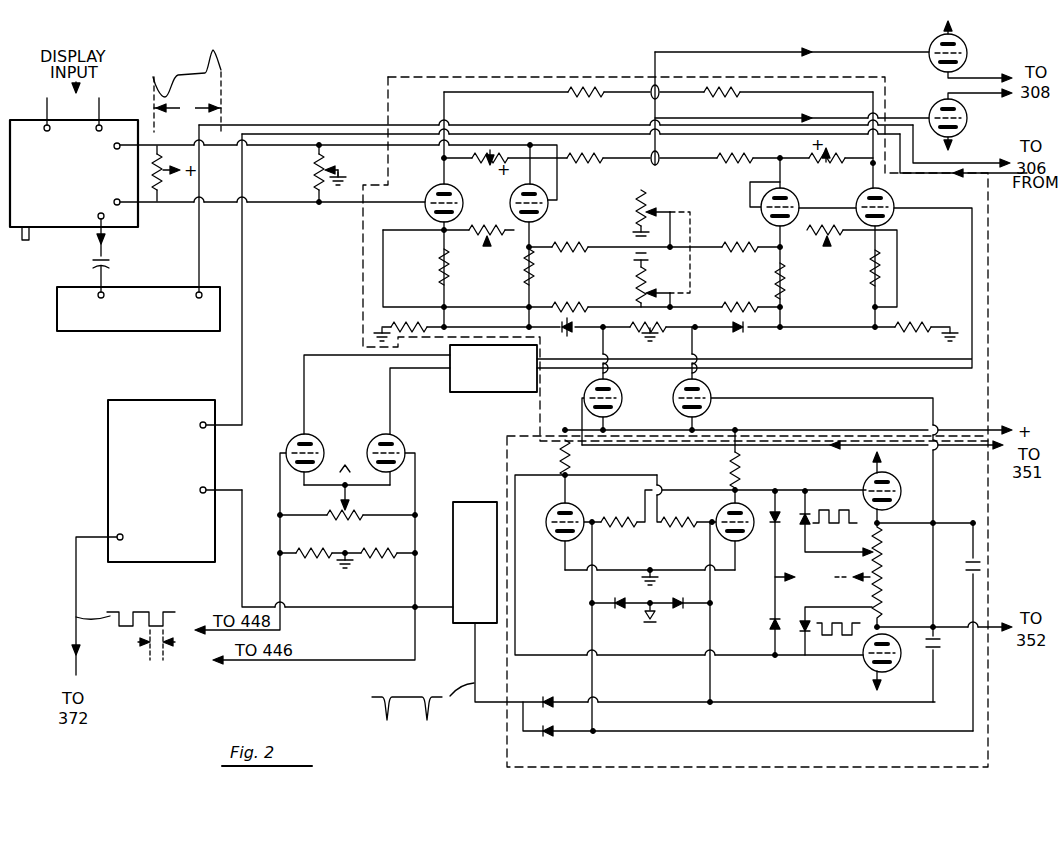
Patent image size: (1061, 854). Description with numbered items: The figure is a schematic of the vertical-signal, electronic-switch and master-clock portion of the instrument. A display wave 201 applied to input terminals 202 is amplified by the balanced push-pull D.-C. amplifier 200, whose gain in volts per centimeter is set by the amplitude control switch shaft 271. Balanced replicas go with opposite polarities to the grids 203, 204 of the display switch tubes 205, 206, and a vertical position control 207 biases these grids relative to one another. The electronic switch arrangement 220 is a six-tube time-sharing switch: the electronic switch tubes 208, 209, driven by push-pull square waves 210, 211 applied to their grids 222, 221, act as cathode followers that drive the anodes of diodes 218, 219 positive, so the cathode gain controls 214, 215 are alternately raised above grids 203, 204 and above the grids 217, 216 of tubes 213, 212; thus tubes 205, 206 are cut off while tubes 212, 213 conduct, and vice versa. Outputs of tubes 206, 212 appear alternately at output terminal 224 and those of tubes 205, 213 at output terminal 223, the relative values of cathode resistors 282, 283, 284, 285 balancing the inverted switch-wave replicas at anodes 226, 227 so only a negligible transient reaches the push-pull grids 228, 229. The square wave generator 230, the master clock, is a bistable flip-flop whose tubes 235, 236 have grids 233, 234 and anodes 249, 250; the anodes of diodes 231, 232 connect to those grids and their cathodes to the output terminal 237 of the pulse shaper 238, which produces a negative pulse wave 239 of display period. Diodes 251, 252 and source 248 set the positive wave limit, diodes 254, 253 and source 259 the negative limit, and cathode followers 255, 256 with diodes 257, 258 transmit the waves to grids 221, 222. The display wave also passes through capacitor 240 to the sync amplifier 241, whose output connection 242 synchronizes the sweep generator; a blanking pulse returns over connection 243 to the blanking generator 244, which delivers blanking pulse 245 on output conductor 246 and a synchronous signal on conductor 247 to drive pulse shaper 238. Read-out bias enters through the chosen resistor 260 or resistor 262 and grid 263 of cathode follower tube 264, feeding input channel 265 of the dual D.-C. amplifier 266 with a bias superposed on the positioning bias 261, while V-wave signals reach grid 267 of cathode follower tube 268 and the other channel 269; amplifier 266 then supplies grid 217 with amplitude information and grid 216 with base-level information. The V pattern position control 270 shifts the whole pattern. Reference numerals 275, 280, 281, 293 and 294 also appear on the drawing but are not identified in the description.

The amplifier 200 is at (77, 176).
The display wave 201 is at (200, 75).
The input terminals 202 is at (96, 126).
The grid 203 is at (433, 193).
The grid 204 is at (514, 196).
The display switch tube 205 is at (428, 214).
The display switch tube 206 is at (546, 210).
The vertical position control 207 is at (332, 166).
The electronic switch tube 208 is at (622, 406).
The electronic switch tube 209 is at (708, 407).
The square wave 210 is at (835, 530).
The square wave 211 is at (838, 639).
The tube 212 is at (770, 216).
The tube 213 is at (862, 215).
The cathode gain control 214 is at (487, 245).
The cathode gain control 215 is at (827, 245).
The grid 216 is at (799, 203).
The grid 217 is at (893, 203).
The diode 218 is at (563, 332).
The diode 219 is at (745, 330).
The electronic switch arrangement 220 is at (604, 281).
The grid 221 is at (708, 393).
The grid 222 is at (590, 393).
The output terminal 223 is at (659, 88).
The output terminal 224 is at (659, 160).
The anode 226 is at (557, 196).
The anode 227 is at (750, 193).
The push-pull grid 228 is at (936, 110).
The push-pull grid 229 is at (936, 50).
The square wave generator 230 is at (676, 553).
The diode 231 is at (548, 736).
The diode 232 is at (548, 698).
The grid 233 is at (572, 510).
The grid 234 is at (719, 514).
The tube 235 is at (553, 538).
The tube 236 is at (748, 540).
The output terminal 237 is at (476, 672).
The pulse shaper 238 is at (492, 565).
The negative pulse wave 239 is at (423, 714).
The capacitor 240 is at (84, 255).
The sync amplifier 241 is at (152, 320).
The output connection 242 is at (197, 264).
The connection 243 is at (240, 392).
The blanking generator 244 is at (178, 478).
The blanking pulse 245 is at (108, 614).
The output conductor 246 is at (74, 580).
The conductor 247 is at (360, 610).
The source 248 is at (656, 626).
The anode 249 is at (560, 508).
The anode 250 is at (739, 468).
The diode 251 is at (616, 609).
The diode 252 is at (684, 609).
The diode 253 is at (782, 518).
The diode 254 is at (771, 624).
The cathode follower 255 is at (870, 670).
The cathode follower 256 is at (868, 480).
The diode 257 is at (804, 616).
The diode 258 is at (836, 523).
The source 259 is at (785, 576).
The chosen resistor 260 is at (378, 558).
The positioning bias 261 is at (348, 493).
The resistor 262 is at (318, 558).
The grid 263 is at (396, 438).
The cathode follower tube 264 is at (406, 458).
The input channel 265 is at (402, 368).
The dual D.-C. amplifier 266 is at (510, 376).
The grid 267 is at (289, 449).
The cathode follower tube 268 is at (313, 437).
The channel 269 is at (326, 348).
The V pattern position control 270 is at (634, 206).
The amplitude control switch shaft 271 is at (24, 241).
The voltage divider resistor 275 is at (853, 575).
The junction 280 is at (888, 510).
The vacuum tube 281 is at (898, 650).
The cathode resistor 282 is at (527, 270).
The cathode resistor 283 is at (438, 264).
The cathode resistor 284 is at (771, 278).
The cathode resistor 285 is at (872, 286).
The output lead 293 is at (970, 83).
The output lead 294 is at (970, 95).